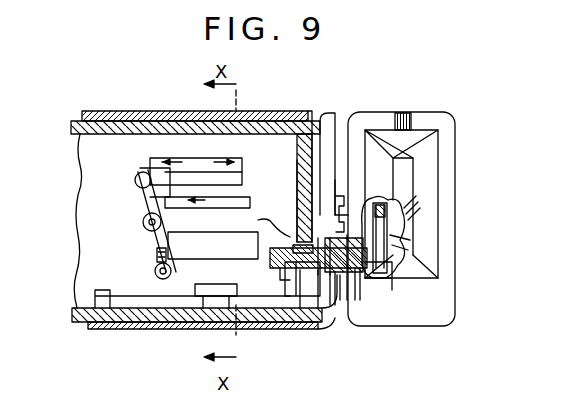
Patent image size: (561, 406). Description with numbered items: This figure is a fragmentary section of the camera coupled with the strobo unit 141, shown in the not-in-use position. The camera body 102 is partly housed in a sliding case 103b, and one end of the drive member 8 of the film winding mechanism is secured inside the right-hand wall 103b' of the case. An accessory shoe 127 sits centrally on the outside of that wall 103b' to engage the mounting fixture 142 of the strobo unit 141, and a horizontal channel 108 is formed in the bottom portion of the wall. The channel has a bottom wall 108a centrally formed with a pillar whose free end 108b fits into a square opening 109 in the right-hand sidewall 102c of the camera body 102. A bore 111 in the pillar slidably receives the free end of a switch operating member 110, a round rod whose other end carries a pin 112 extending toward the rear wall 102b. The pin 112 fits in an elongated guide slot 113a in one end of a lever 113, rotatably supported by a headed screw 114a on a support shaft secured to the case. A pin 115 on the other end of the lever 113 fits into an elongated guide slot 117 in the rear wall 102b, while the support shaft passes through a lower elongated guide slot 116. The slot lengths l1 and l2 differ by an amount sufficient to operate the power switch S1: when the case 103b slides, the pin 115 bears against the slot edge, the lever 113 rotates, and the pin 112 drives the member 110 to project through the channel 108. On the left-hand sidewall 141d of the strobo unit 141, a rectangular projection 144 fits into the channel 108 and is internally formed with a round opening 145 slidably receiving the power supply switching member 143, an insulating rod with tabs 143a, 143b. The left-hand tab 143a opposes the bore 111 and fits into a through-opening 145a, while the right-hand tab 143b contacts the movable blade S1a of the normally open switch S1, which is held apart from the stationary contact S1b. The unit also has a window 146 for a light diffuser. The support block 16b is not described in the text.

The drive member 8 is at (130, 322).
The support block 16b is at (200, 320).
The camera body 102 is at (74, 127).
The rear wall of the camera body 102b is at (92, 160).
The right-hand sidewall of the camera body 102c is at (312, 140).
The sliding case 103b is at (195, 99).
The right-hand wall of the case 103b' is at (332, 142).
The horizontal channel 108 is at (302, 235).
The bottom wall of the horizontal channel 108a is at (326, 290).
The free end of the pillar 108b is at (294, 302).
The square opening 109 is at (228, 215).
The switch operating member 110 is at (202, 255).
The bore 111 is at (288, 273).
The pin 112 is at (156, 269).
The lever 113 is at (145, 205).
The elongated guide slot 113a is at (156, 253).
The headed screw 114a is at (145, 219).
The pin 115 is at (136, 181).
The elongated guide slot 116 is at (244, 178).
The elongated guide slot 117 is at (158, 168).
The accessory shoe 127 is at (342, 196).
The strobo unit 141 is at (450, 126).
The left-hand sidewall of the strobo unit 141d is at (336, 132).
The mounting fixture 142 is at (298, 200).
The power supply switching member 143 is at (365, 277).
The left-hand tab 143a is at (342, 300).
The right-hand tab 143b is at (386, 272).
The rectangular projection 144 is at (340, 305).
The round opening 145 is at (392, 290).
The through-opening 145a is at (298, 249).
The window 146 is at (428, 172).
The power switch S1 is at (385, 255).
The movable blade S1a is at (408, 253).
The stationary contact S1b is at (395, 232).
The length of slot l1 is at (172, 152).
The length of slot l2 is at (211, 171).